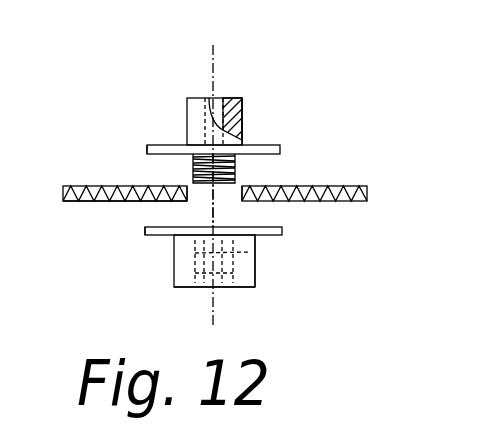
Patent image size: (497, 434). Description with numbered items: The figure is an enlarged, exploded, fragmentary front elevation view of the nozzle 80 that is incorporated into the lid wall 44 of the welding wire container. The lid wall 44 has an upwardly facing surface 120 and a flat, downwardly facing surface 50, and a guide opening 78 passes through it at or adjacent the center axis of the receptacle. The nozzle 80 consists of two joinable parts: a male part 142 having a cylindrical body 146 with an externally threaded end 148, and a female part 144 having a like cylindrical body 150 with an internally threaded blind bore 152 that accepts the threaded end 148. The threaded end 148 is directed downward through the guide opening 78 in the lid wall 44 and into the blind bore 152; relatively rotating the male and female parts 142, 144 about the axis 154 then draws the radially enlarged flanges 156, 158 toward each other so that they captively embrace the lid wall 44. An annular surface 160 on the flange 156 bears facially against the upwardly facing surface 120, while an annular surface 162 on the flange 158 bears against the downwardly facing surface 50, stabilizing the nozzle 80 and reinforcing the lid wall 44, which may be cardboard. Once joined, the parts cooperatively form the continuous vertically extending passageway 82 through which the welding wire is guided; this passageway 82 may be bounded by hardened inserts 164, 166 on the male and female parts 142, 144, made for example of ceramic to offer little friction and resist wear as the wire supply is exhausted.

The lid wall 44 is at (118, 186).
The downwardly facing surface 50 is at (85, 201).
The guide opening 78 is at (242, 193).
The nozzle 80 is at (280, 176).
The passageway 82 is at (207, 98).
The upwardly facing surface 120 is at (348, 186).
The male part 142 is at (249, 126).
The female part 144 is at (262, 259).
The cylindrical body 146 is at (187, 117).
The externally threaded end 148 is at (240, 168).
The cylindrical body 150 is at (174, 258).
The blind bore 152 is at (256, 246).
The axis 154 is at (210, 60).
The flange 156 is at (280, 145).
The flange 158 is at (283, 228).
The annular surface 160 is at (150, 156).
The annular surface 162 is at (148, 228).
The hardened insert 164 is at (228, 98).
The hardened insert 166 is at (240, 290).